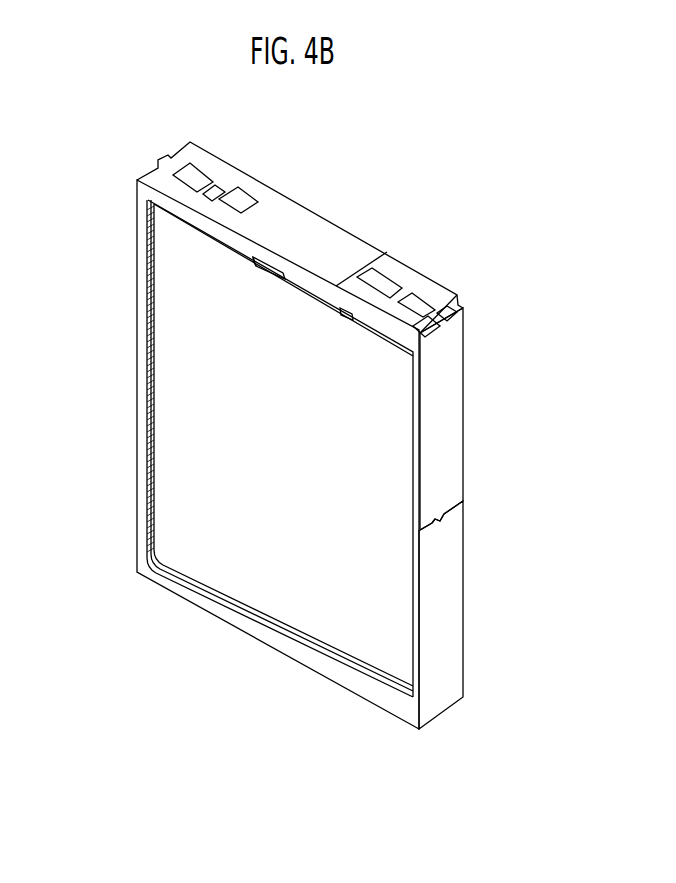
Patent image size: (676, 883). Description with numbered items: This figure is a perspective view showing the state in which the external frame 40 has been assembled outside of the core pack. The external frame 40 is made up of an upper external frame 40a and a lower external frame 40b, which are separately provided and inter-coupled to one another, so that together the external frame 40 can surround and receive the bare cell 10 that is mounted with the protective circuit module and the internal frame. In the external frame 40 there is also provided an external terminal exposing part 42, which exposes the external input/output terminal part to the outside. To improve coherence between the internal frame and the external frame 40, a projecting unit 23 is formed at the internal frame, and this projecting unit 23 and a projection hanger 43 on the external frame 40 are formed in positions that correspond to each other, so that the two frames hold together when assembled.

The external frame 40 is at (128, 228).
The upper external frame 40a is at (450, 437).
The lower external frame 40b is at (448, 592).
The external terminal exposing part 42 is at (245, 198).
The projection hanger 43 is at (290, 256).
The projecting unit 23 is at (273, 270).
The bare cell 10 is at (172, 445).